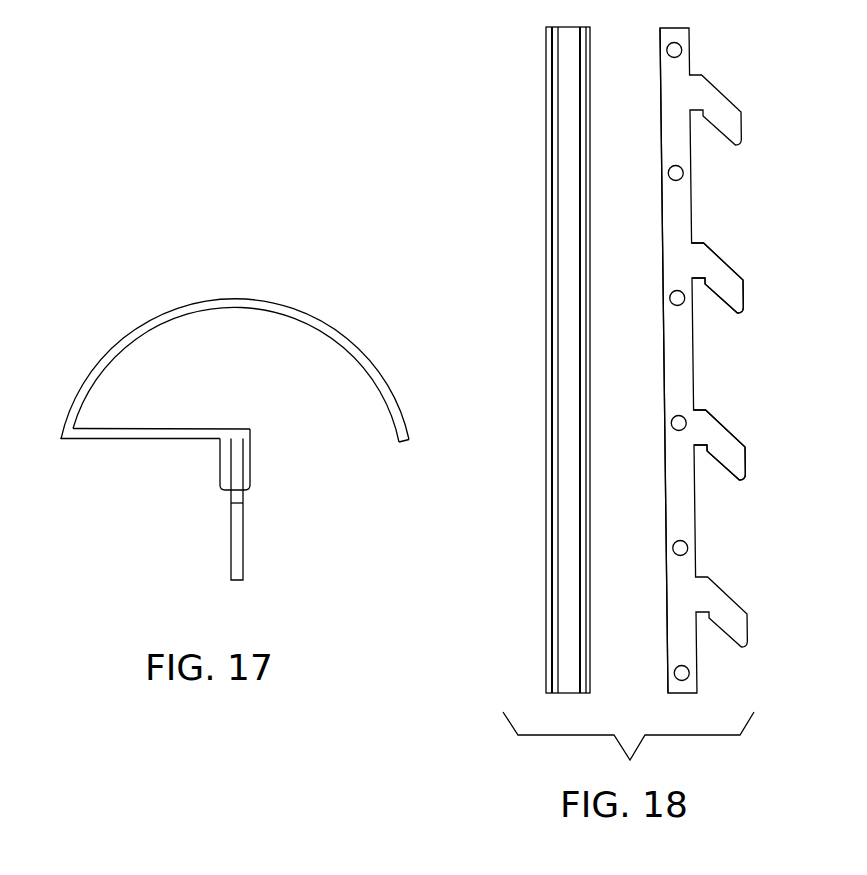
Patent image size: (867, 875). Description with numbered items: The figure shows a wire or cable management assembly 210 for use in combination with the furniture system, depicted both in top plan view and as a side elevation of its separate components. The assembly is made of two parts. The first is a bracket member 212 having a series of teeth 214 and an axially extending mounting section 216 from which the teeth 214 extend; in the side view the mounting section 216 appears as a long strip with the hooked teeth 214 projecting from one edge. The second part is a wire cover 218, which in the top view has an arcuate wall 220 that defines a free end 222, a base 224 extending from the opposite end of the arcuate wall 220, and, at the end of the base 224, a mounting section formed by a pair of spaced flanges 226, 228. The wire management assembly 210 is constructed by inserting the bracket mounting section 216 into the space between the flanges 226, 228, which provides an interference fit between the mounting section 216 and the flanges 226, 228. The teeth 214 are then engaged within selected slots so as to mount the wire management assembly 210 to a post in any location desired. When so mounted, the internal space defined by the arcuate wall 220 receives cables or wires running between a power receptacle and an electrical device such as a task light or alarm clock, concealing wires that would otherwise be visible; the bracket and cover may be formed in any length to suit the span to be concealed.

In FIG. 17, the wire management assembly 210 is at (312, 268).
In FIG. 17, the bracket member 212 is at (226, 523).
In FIG. 18, the bracket member 212 is at (660, 398).
In FIG. 18, the teeth 214 is at (735, 273).
In FIG. 18, the mounting section 216 is at (665, 226).
In FIG. 17, the wire cover 218 is at (128, 322).
In FIG. 18, the wire cover 218 is at (540, 145).
In FIG. 17, the arcuate wall 220 is at (241, 363).
In FIG. 17, the free end 222 is at (406, 445).
In FIG. 17, the base 224 is at (162, 428).
In FIG. 17, the flange 226 is at (220, 480).
In FIG. 17, the flange 228 is at (248, 470).